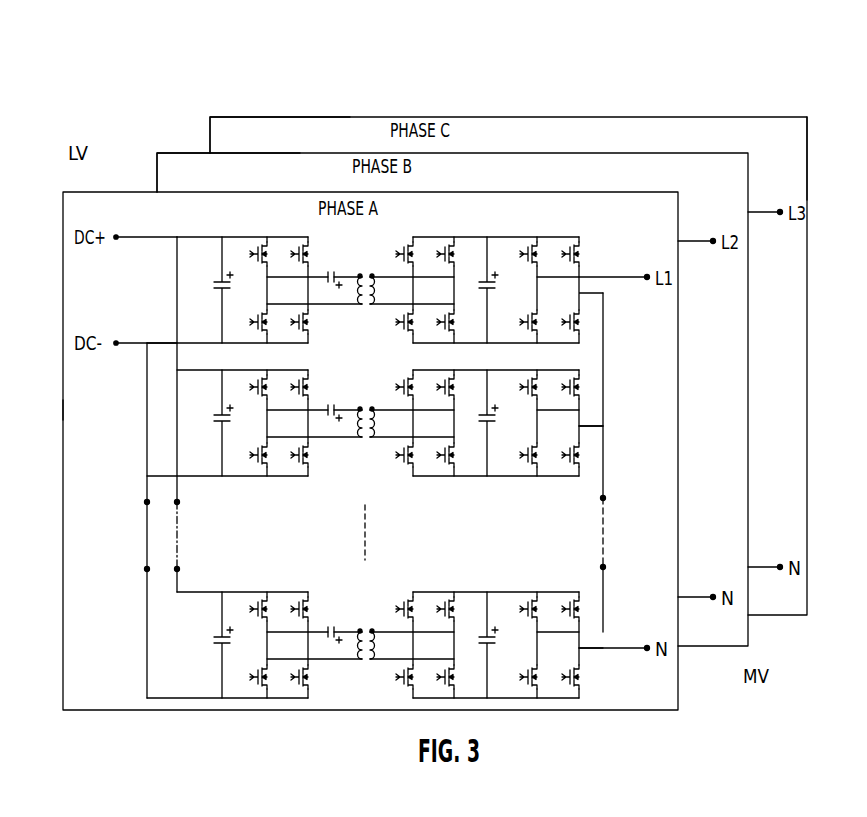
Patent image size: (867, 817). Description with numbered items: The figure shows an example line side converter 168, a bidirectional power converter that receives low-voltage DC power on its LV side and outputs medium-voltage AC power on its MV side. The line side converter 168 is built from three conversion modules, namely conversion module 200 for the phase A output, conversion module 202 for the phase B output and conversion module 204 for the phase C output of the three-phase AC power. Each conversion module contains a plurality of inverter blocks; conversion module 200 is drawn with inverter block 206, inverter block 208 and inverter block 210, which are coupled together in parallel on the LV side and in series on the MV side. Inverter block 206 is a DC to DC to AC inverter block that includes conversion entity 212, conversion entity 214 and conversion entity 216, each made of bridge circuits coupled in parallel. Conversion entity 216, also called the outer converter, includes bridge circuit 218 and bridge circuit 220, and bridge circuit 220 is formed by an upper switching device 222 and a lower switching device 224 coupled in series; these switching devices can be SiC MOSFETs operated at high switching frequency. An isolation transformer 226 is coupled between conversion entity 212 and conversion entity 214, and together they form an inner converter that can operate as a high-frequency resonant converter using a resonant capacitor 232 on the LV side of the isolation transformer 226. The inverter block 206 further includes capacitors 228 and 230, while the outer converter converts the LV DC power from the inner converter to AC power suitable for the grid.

The line side converter 168 is at (638, 83).
The conversion module 200 is at (62, 218).
The conversion module 202 is at (180, 152).
The conversion module 204 is at (230, 116).
The inverter block 206 is at (392, 281).
The inverter block 208 is at (205, 477).
The inverter block 210 is at (205, 592).
The conversion entity 212 is at (308, 228).
The conversion entity 214 is at (463, 228).
The conversion entity 216 is at (581, 269).
The bridge circuit 218 is at (517, 278).
The bridge circuit 220 is at (580, 268).
The upper switching device 222 is at (579, 250).
The lower switching device 224 is at (582, 316).
The isolation transformer 226 is at (355, 306).
The capacitor 228 is at (221, 292).
The capacitor 230 is at (491, 292).
The resonant capacitor 232 is at (331, 270).